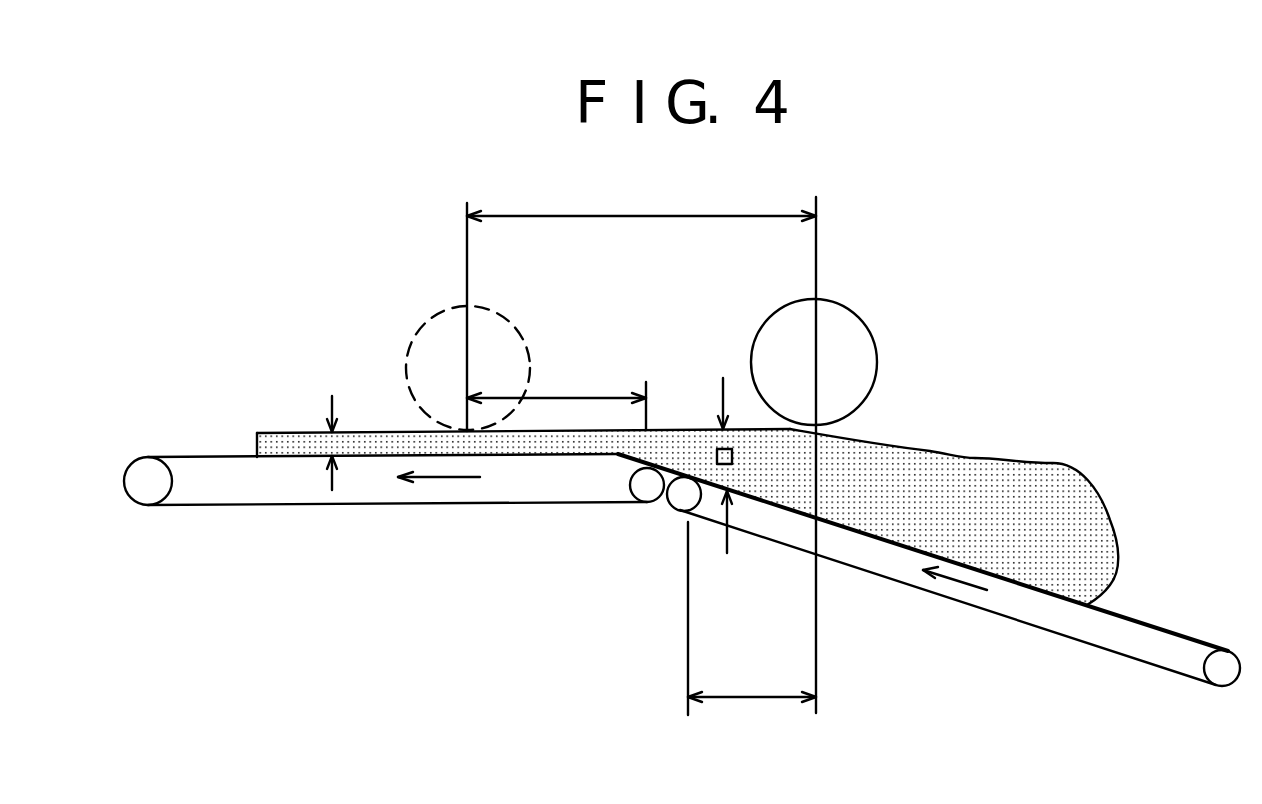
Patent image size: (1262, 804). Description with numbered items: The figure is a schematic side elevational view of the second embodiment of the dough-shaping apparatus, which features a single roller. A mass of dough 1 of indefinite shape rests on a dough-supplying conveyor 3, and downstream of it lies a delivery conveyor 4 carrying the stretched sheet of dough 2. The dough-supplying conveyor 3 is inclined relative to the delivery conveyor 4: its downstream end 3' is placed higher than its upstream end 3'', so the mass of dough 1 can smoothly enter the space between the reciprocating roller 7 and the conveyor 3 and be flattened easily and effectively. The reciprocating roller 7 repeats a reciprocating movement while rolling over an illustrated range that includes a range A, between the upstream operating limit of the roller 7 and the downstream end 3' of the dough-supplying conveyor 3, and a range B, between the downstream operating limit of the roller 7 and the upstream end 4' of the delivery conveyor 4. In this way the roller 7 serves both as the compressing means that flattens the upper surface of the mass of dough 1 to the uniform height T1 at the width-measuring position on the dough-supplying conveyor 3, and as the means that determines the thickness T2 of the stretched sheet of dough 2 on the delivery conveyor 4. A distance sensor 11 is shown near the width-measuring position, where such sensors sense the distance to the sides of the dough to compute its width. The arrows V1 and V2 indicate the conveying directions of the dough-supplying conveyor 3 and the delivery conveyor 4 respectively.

The mass of dough 1 is at (972, 455).
The stretched sheet of dough 2 is at (302, 432).
The dough-supplying conveyor 3 is at (923, 569).
The downstream end of the dough-supplying conveyor 3' is at (675, 531).
The upstream end of the dough-supplying conveyor 3'' is at (1226, 703).
The delivery conveyor 4 is at (385, 438).
The upstream end of the delivery conveyor 4' is at (634, 512).
The reciprocating roller 7 is at (870, 325).
The distance sensor 11 is at (727, 464).
The range A is at (752, 618).
The range B is at (556, 398).
The dough thickness T1 is at (722, 451).
The dough thickness T2 is at (331, 429).
The feed conveyor speed V1 is at (972, 590).
The discharge conveyor speed V2 is at (458, 480).